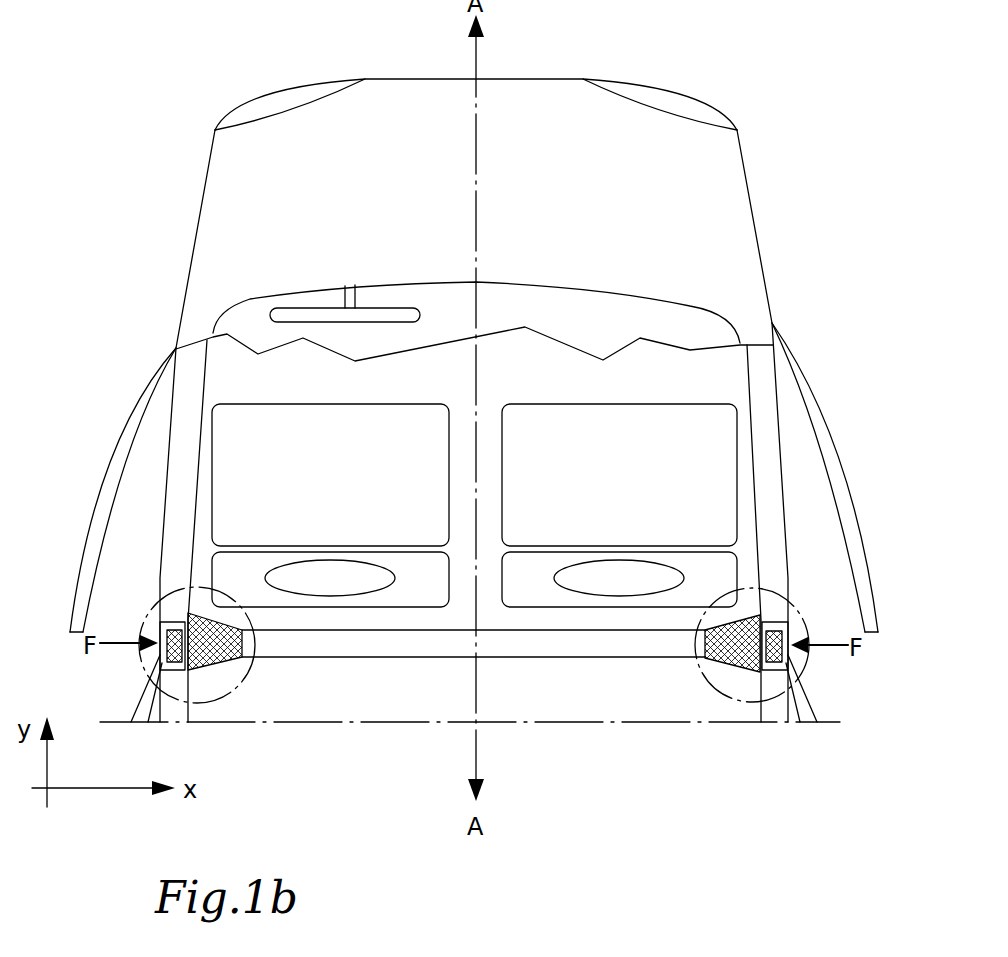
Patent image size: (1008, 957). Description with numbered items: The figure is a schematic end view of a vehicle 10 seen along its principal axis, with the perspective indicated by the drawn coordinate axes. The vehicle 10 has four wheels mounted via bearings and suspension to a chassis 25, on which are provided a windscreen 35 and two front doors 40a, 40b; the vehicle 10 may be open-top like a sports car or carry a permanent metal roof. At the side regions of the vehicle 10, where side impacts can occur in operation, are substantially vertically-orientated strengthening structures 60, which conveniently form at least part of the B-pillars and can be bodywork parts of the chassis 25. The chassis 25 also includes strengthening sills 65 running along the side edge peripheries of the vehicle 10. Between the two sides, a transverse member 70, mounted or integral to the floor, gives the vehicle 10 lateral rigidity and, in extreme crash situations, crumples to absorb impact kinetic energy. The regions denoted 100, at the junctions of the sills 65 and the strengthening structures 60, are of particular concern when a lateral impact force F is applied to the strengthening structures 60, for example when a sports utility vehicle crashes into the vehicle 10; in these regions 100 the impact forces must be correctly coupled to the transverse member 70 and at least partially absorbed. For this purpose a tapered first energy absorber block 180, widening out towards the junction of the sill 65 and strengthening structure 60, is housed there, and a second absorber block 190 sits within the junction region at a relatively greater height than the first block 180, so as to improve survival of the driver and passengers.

The vehicle 10 is at (778, 149).
The chassis 25 is at (703, 213).
The windscreen 35 is at (677, 323).
The front door 40a is at (121, 466).
The front door 40b is at (826, 452).
The strengthening sill 65 is at (177, 500).
The vertically-orientated strengthening structure 60 is at (158, 624).
The transverse member 70 is at (614, 652).
The first energy absorber block 180 is at (222, 665).
The second absorber block 190 is at (167, 658).
The region 100 is at (220, 705).